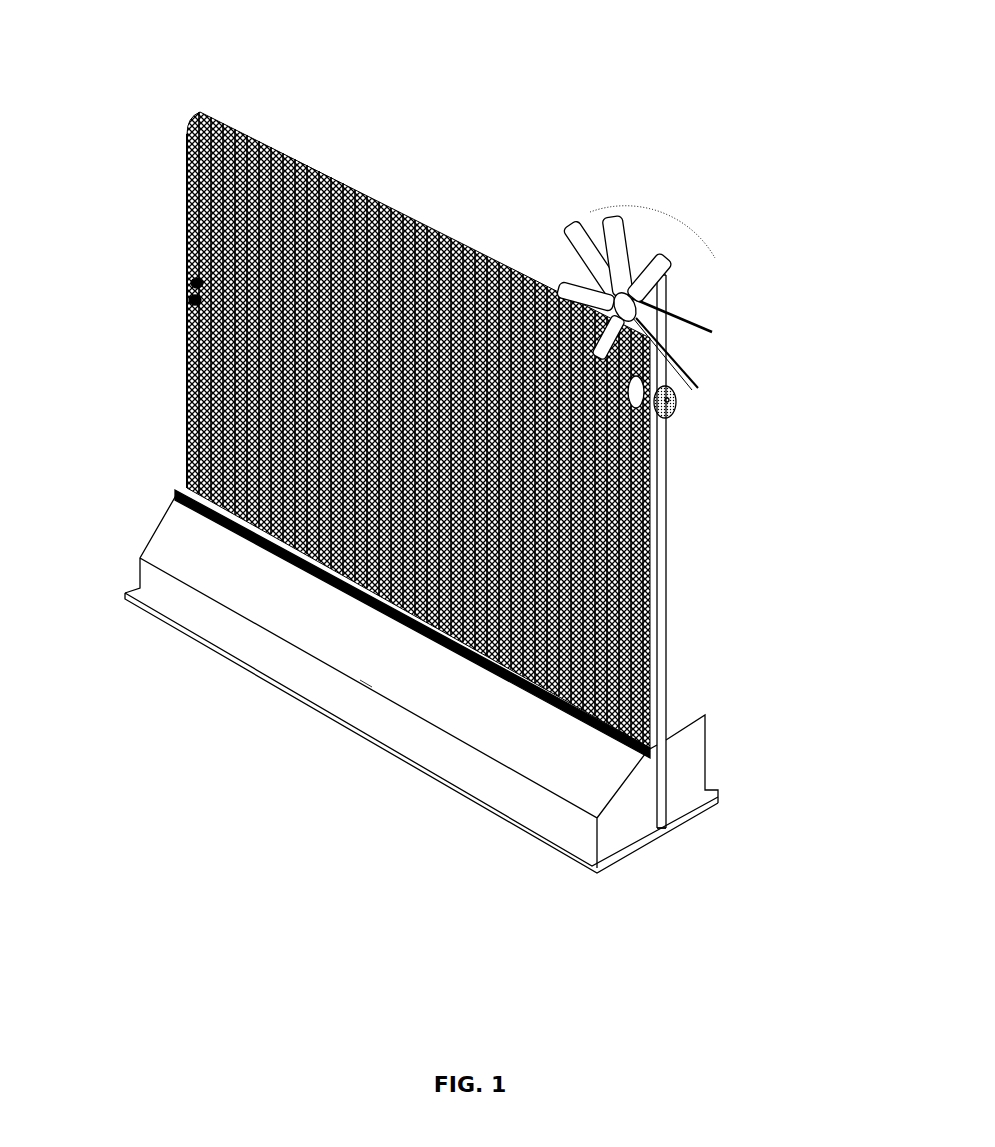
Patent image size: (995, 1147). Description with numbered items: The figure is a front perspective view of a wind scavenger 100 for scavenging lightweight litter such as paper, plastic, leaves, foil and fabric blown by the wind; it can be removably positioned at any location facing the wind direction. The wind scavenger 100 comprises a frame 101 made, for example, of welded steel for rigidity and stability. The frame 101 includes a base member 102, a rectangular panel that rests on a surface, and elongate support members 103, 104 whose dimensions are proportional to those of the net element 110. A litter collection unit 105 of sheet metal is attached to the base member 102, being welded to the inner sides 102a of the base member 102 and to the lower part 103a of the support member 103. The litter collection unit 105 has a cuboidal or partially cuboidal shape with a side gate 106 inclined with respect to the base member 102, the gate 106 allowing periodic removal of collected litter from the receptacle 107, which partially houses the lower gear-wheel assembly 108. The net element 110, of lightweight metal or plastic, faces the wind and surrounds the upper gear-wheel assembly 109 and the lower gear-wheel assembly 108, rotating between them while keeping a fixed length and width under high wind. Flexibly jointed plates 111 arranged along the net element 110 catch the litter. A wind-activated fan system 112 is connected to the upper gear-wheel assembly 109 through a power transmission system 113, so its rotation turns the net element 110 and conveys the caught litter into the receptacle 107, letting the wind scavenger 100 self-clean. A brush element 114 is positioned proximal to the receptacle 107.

The wind scavenger 100 is at (535, 68).
The frame 101 is at (789, 752).
The base member 102 is at (703, 818).
The inner sides of the base member 102a is at (613, 847).
The elongate support member 103 is at (668, 770).
The lower part of the support member 103a is at (668, 826).
The elongate support member 104 is at (186, 465).
The litter collection unit 105 is at (707, 720).
The side gate 106 is at (558, 760).
The receptacle 107 is at (667, 726).
The lower gear-wheel assembly 108 is at (645, 753).
The upper gear-wheel assembly 109 is at (642, 408).
The net element 110 is at (243, 383).
The flexibly jointed plates 111 is at (197, 283).
The fan system 112 is at (645, 248).
The power transmission system 113 is at (690, 348).
The brush element 114 is at (242, 532).